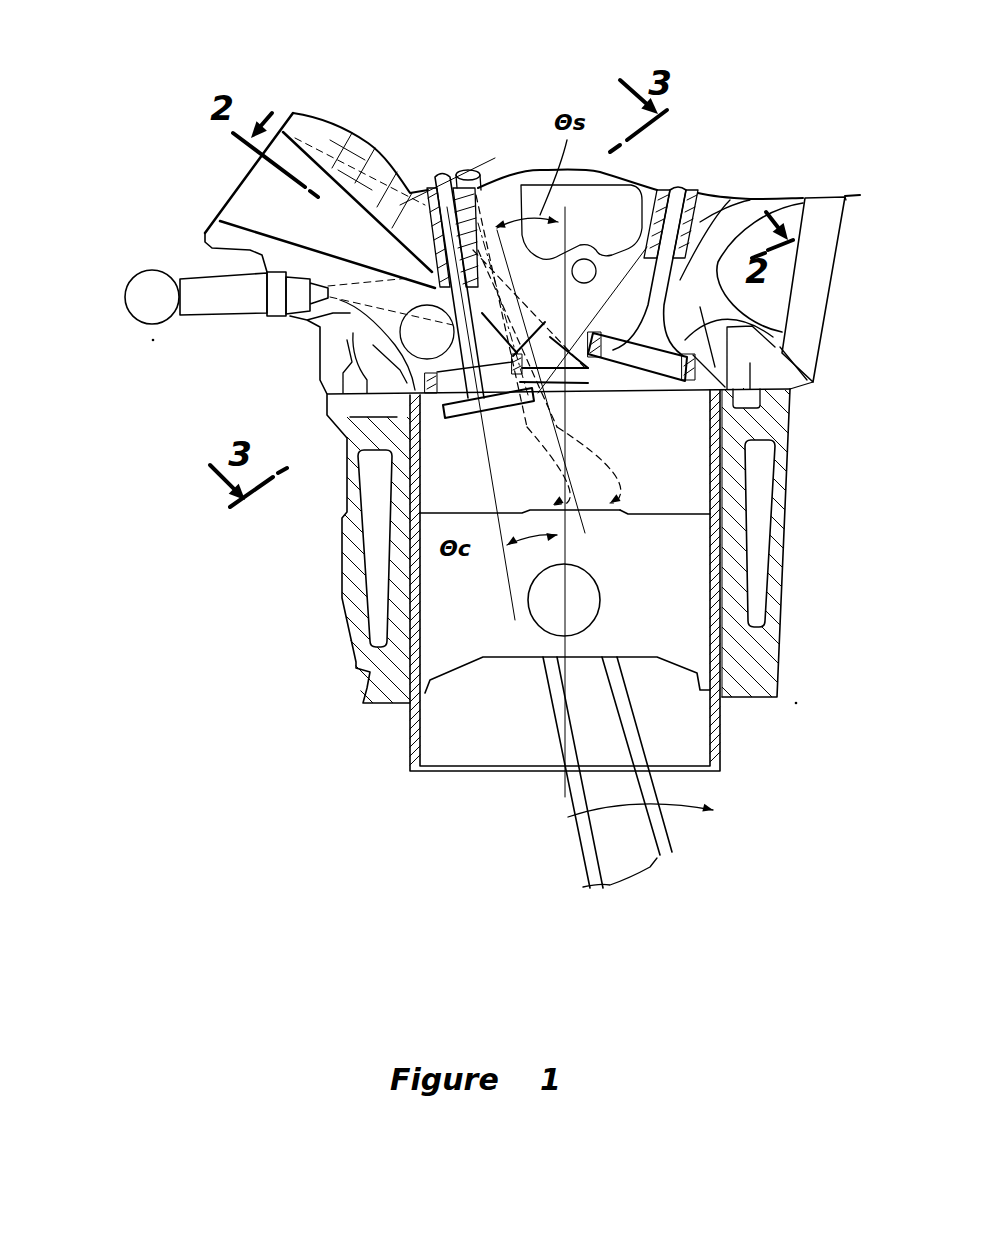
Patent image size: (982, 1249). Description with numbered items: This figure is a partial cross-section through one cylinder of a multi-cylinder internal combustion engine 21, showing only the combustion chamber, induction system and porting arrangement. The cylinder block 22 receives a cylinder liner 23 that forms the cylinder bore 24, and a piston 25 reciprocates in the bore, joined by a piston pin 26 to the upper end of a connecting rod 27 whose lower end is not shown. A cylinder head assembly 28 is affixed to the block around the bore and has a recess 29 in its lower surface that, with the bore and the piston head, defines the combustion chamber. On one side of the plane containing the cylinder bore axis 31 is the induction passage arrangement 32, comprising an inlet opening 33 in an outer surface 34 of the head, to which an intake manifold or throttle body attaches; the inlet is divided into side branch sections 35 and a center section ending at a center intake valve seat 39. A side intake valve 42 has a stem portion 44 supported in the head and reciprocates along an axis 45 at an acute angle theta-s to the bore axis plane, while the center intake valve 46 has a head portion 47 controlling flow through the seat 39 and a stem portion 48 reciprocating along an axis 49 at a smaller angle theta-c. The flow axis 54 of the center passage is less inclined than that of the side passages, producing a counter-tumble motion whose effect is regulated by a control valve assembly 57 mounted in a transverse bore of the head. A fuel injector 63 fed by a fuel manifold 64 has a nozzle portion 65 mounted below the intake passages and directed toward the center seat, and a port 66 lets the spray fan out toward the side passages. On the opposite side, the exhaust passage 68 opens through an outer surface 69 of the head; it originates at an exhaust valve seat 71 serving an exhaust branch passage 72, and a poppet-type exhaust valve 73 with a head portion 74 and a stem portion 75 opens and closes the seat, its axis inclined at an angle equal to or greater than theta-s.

The internal combustion engine 21 is at (172, 109).
The cylinder block 22 is at (787, 552).
The cylinder liner 23 is at (410, 740).
The cylinder bore 24 is at (712, 490).
The piston 25 is at (497, 652).
The piston pin 26 is at (600, 610).
The connecting rod 27 is at (583, 860).
The cylinder head assembly 28 is at (647, 173).
The recess 29 is at (547, 350).
The cylinder bore axis 31 is at (565, 547).
The induction passage arrangement 32 is at (222, 215).
The inlet opening 33 is at (240, 197).
The outer surface 34 is at (293, 113).
The side branch section 35 is at (353, 160).
The center intake valve seat 39 is at (430, 378).
The side intake valve 42 is at (476, 155).
The stem portion 44 is at (496, 226).
The reciprocal axis 45 is at (585, 520).
The center intake valve 46 is at (441, 166).
The head portion 47 is at (502, 404).
The stem portion 48 is at (332, 267).
The reciprocation axis 49 is at (507, 588).
The flow axis 54 is at (387, 350).
The control valve assembly 57 is at (400, 291).
The fuel injector 63 is at (200, 313).
The fuel manifold 64 is at (125, 295).
The nozzle portion 65 is at (263, 293).
The port 66 is at (361, 257).
The exhaust passage 68 is at (820, 315).
The outer surface 69 is at (843, 227).
The exhaust valve seat 71 is at (667, 375).
The exhaust branch passage 72 is at (783, 363).
The exhaust valve 73 is at (740, 212).
The head portion 74 is at (628, 368).
The stem portion 75 is at (690, 196).